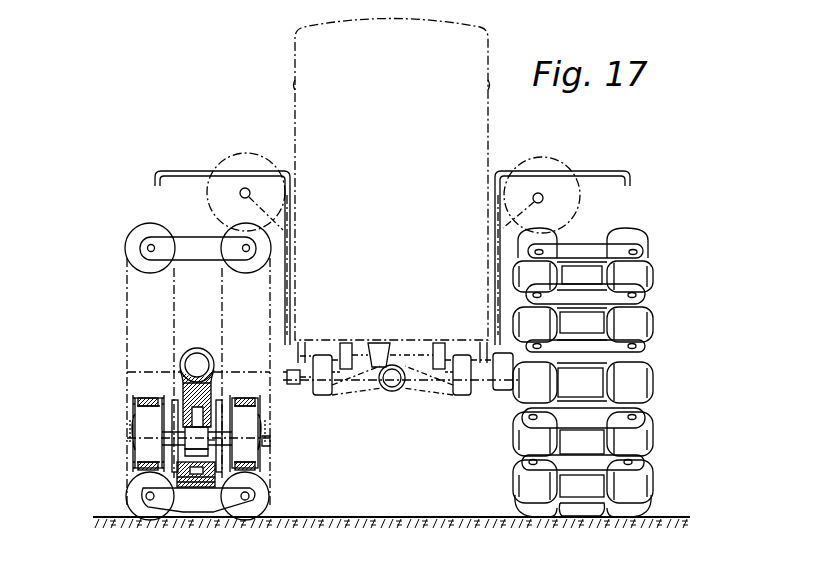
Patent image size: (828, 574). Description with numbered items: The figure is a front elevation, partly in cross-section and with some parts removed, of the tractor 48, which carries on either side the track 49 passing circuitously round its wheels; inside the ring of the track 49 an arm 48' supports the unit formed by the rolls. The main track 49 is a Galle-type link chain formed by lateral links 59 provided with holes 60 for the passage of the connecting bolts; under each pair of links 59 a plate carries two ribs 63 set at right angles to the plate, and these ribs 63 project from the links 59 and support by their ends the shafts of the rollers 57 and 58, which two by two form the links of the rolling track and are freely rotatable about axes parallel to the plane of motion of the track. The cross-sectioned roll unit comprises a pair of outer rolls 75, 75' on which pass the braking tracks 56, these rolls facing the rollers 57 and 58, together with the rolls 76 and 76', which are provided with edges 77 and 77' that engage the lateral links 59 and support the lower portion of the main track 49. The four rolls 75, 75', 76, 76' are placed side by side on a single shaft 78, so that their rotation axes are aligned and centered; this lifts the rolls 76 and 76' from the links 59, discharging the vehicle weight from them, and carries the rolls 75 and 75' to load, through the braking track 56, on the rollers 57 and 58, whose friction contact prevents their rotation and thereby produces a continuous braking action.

The tractor 48 is at (364, 180).
The arm 48' is at (197, 364).
The track 49 is at (511, 490).
The braking tracks 56 is at (150, 398).
The roller 57 is at (148, 510).
The roller 58 is at (245, 510).
The lateral links 59 is at (203, 466).
The holes 60 is at (559, 545).
The ribs 63 is at (202, 503).
The outer roll 75 is at (125, 431).
The outer roll 75' is at (271, 428).
The roll 76 is at (159, 444).
The roll 76' is at (269, 461).
The edge 77 is at (157, 399).
The edge 77' is at (239, 399).
The shaft 78 is at (272, 442).